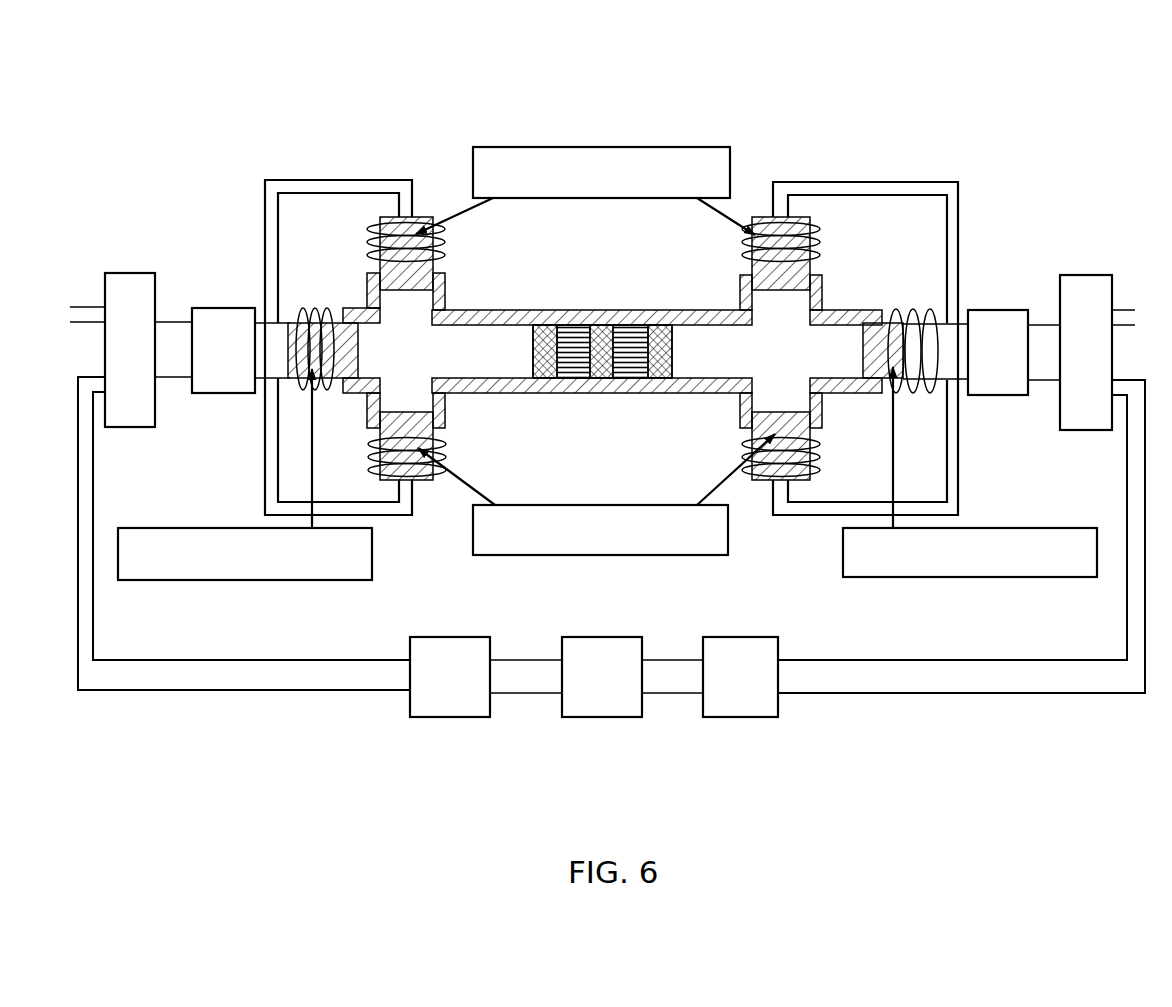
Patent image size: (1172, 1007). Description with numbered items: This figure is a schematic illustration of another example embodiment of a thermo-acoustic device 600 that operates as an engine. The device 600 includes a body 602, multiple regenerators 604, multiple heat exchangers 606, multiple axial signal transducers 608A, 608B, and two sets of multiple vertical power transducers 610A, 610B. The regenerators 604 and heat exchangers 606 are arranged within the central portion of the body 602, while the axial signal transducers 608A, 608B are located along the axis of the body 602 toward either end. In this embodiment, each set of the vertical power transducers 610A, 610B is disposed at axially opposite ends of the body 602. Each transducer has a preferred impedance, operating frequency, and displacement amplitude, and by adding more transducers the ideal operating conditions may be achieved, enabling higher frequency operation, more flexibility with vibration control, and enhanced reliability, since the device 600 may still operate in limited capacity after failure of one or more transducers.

The thermo-acoustic device 600 is at (226, 55).
The body 602 is at (542, 310).
The regenerators 604 is at (577, 323).
The heat exchangers 606 is at (607, 364).
The axial signal transducer 608A is at (300, 309).
The axial signal transducer 608B is at (904, 326).
The vertical power transducers 610A is at (421, 221).
The vertical power transducers 610B is at (769, 229).